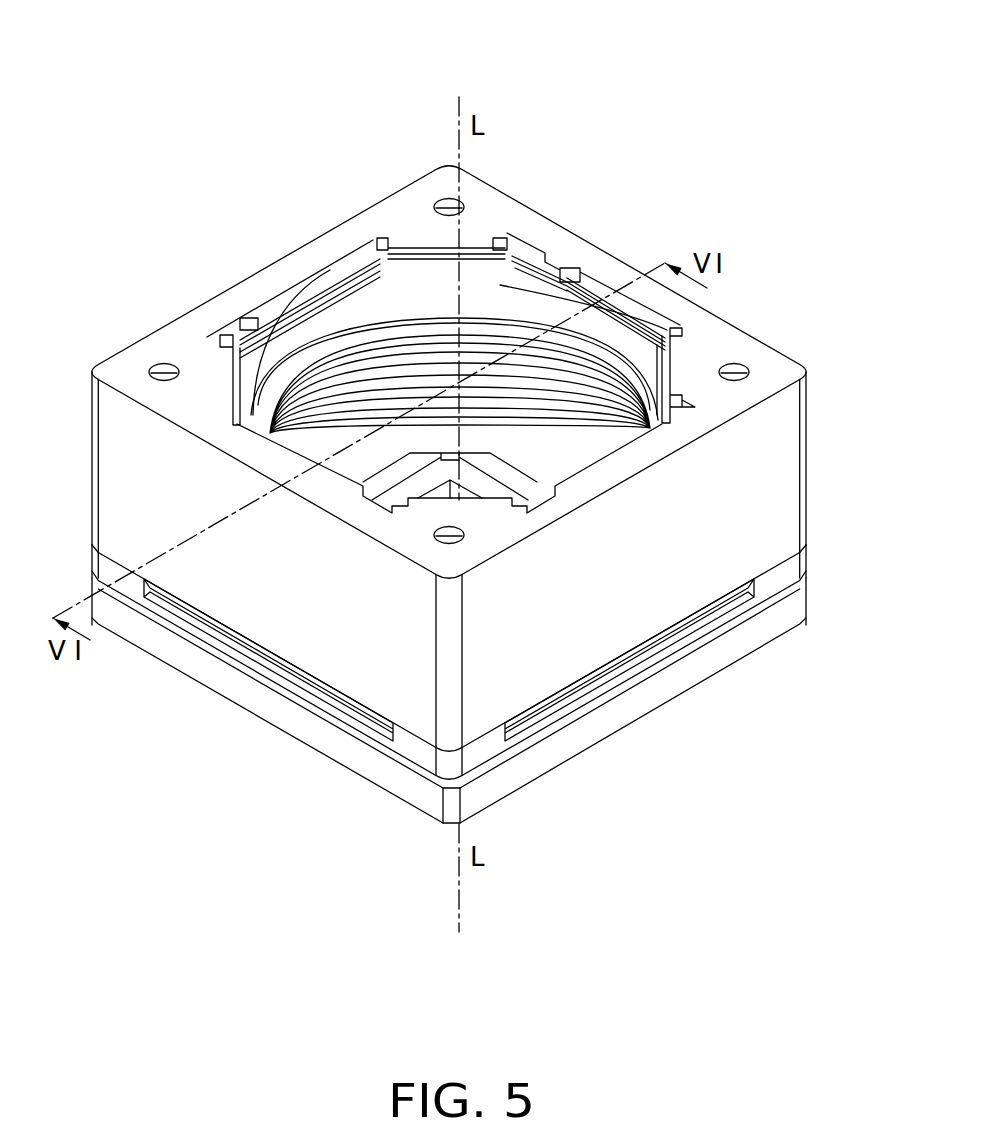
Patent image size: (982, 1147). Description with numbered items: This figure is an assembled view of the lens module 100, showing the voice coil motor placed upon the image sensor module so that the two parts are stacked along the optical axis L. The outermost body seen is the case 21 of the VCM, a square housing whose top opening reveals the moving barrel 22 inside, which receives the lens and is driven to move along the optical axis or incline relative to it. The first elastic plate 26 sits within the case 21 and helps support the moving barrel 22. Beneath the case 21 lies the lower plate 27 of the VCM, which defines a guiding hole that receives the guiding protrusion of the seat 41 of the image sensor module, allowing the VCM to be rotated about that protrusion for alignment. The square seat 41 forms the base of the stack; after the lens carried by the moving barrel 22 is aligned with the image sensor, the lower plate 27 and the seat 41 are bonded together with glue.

The lens module 100 is at (478, 42).
The case 21 is at (765, 446).
The moving barrel 22 is at (648, 343).
The first elastic plate 26 is at (273, 333).
The lower plate 27 is at (785, 570).
The seat 41 is at (788, 613).